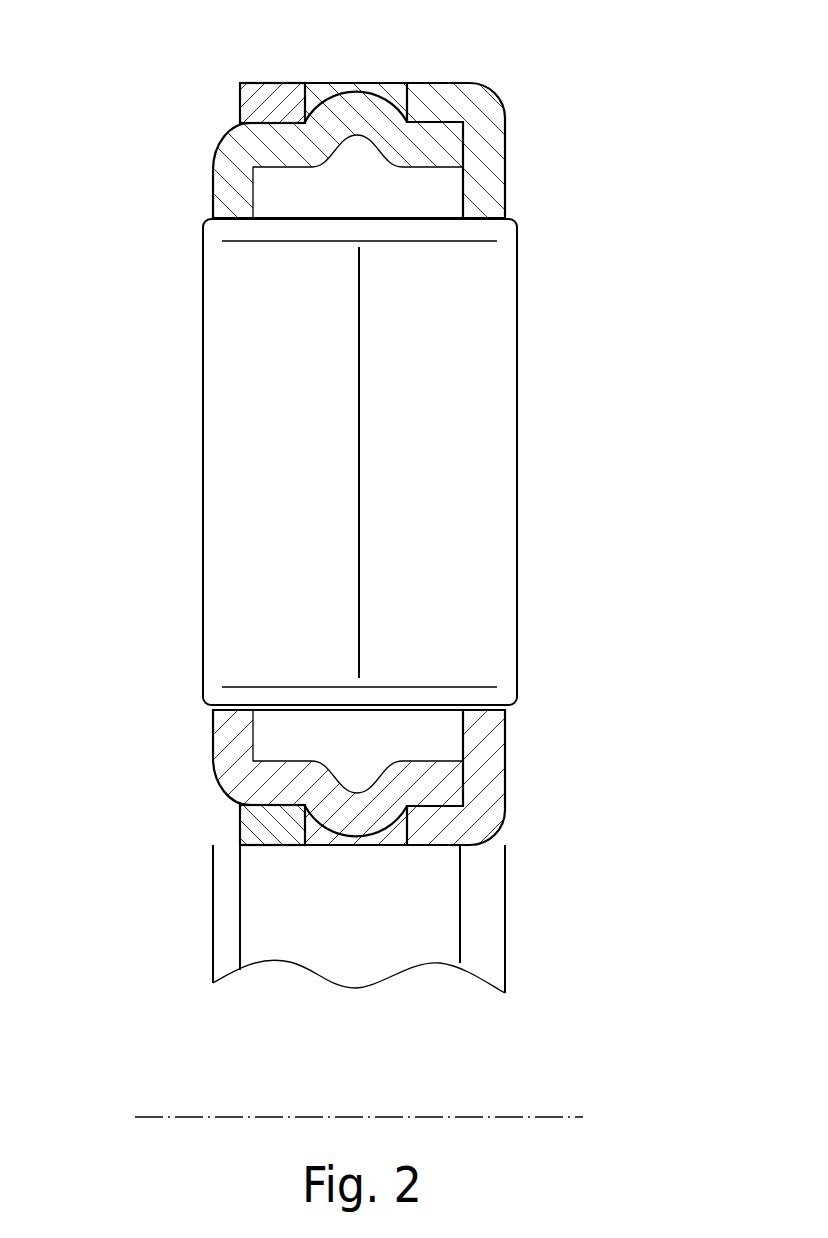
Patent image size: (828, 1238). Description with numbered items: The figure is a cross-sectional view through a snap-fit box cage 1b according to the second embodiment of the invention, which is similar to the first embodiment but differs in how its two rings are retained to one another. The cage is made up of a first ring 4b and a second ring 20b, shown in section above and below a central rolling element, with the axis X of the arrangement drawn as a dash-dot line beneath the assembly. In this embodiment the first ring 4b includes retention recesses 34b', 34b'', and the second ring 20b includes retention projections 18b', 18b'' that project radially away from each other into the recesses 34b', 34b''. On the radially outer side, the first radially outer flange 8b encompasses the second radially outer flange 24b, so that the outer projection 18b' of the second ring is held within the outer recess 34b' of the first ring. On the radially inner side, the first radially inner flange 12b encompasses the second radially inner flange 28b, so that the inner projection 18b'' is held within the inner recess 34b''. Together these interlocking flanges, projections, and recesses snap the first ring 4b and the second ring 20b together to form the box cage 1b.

The snap-fit box cage 1b is at (538, 85).
The first ring 4b is at (512, 743).
The first radially outer flange 8b is at (268, 100).
The first radially inner flange 12b is at (270, 820).
The retention projection 18b' is at (383, 83).
The retention projection 18b'' is at (348, 851).
The second ring 20b is at (362, 809).
The second radially outer flange 24b is at (438, 147).
The second radially inner flange 28b is at (440, 785).
The retention recess 34b' is at (327, 61).
The retention recess 34b'' is at (382, 873).
The rotation axis X is at (543, 1117).